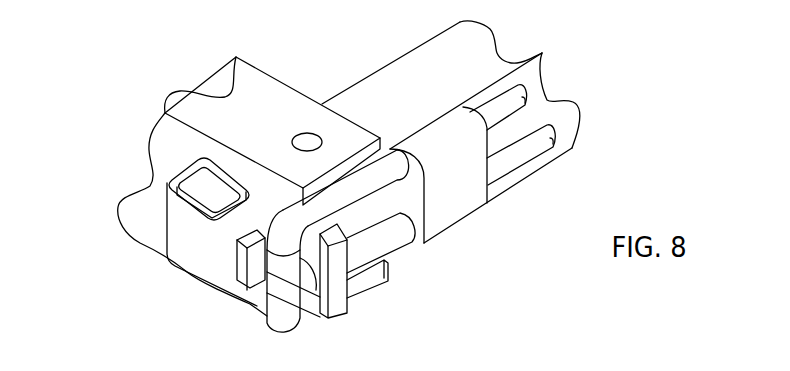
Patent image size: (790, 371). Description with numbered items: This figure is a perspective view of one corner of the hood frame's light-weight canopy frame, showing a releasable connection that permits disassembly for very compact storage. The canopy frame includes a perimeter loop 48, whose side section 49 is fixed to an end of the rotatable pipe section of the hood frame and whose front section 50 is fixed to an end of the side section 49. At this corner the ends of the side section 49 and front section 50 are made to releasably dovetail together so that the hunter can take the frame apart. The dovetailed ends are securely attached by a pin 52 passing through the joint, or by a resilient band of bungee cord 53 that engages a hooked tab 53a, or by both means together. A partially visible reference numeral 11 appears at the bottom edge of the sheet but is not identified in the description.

The perimeter loop 48 is at (146, 138).
The side section 49 is at (557, 158).
The front section 50 is at (258, 70).
The pin 52 is at (306, 133).
The resilient band of bungee cord 53 is at (364, 193).
The hooked tab 53a is at (267, 312).
The frame 11 is at (435, 366).